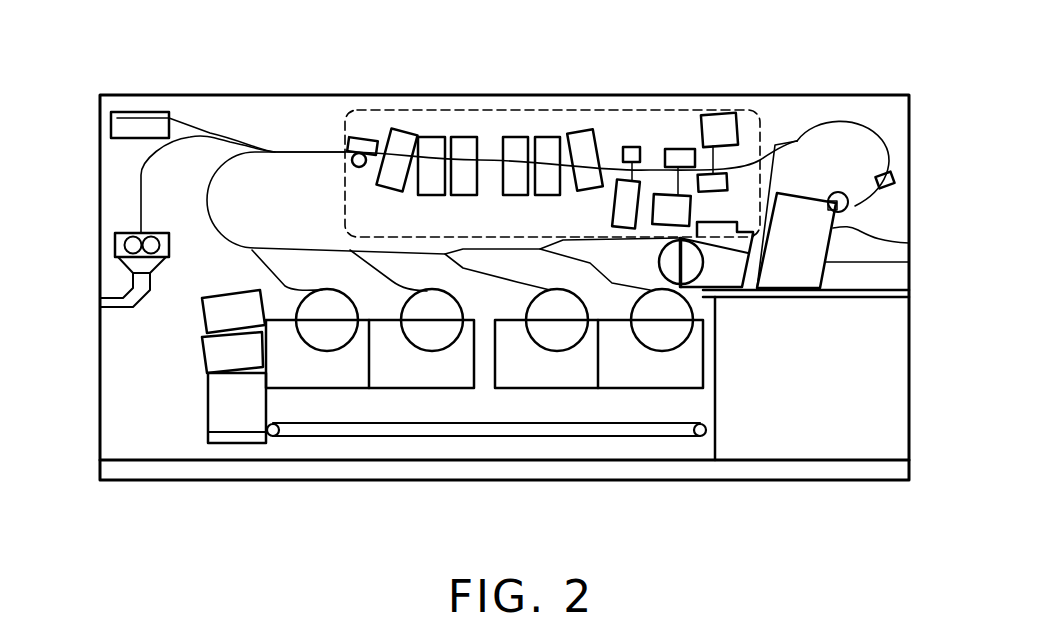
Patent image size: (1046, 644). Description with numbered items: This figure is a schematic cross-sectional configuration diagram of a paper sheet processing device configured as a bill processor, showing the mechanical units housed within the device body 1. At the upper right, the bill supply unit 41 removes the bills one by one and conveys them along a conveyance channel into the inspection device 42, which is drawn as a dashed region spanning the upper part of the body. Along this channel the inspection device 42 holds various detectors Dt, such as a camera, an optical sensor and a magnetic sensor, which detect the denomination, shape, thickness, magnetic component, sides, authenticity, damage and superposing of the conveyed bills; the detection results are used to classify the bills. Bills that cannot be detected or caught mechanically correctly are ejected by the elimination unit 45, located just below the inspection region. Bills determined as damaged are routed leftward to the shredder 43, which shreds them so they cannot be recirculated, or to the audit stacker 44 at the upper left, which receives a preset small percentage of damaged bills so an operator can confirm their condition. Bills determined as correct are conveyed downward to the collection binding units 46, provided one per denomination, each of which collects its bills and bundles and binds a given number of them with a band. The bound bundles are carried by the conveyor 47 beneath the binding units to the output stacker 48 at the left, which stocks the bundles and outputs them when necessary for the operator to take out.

The device body 1 is at (909, 135).
The bill supply unit 41 is at (909, 243).
The inspection device 42 is at (345, 195).
The shredder 43 is at (115, 252).
The audit stacker 44 is at (142, 110).
The elimination unit 45 is at (710, 268).
The collection binding units 46 is at (324, 390).
The conveyor 47 is at (486, 440).
The output stacker 48 is at (203, 358).
The detectors Dt is at (577, 131).